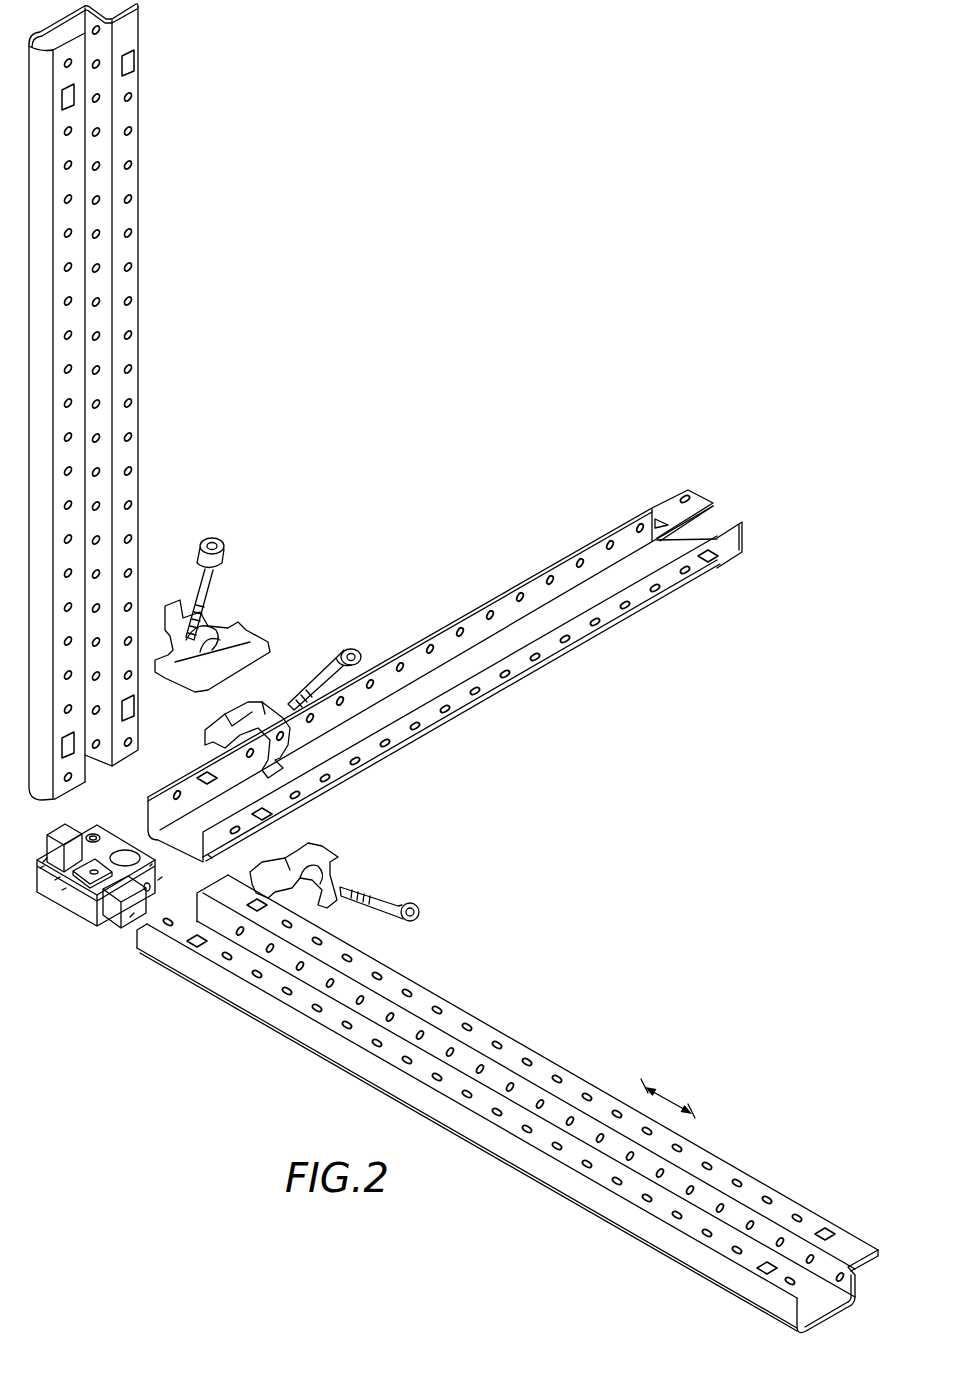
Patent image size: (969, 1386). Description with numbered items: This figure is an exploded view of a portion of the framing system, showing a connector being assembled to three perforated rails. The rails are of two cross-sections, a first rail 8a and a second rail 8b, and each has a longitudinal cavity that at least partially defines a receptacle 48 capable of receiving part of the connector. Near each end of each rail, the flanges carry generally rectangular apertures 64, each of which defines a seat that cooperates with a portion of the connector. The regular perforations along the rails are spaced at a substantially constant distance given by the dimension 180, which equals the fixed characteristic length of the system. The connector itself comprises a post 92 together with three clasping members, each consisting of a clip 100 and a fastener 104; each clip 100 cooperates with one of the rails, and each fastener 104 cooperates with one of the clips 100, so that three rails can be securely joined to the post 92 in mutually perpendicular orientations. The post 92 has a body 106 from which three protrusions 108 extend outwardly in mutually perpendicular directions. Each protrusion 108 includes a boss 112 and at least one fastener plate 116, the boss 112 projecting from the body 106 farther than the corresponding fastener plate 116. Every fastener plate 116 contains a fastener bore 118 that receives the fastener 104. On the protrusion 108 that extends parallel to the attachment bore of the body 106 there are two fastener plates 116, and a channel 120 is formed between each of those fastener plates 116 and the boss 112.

The first rail 8a is at (150, 395).
The second rail 8b is at (538, 560).
The rectangular aperture 64 is at (63, 746).
The clip 100 is at (237, 630).
The fastener 104 is at (200, 560).
The post 92 is at (88, 930).
The boss 112 is at (60, 830).
The channel 120 is at (93, 835).
The protrusion 108 is at (139, 803).
The fastener plate 116 is at (105, 842).
The body 106 is at (62, 888).
The fastener bore 118 is at (164, 876).
The receptacle 48 is at (212, 857).
The dimension 180 is at (672, 1102).